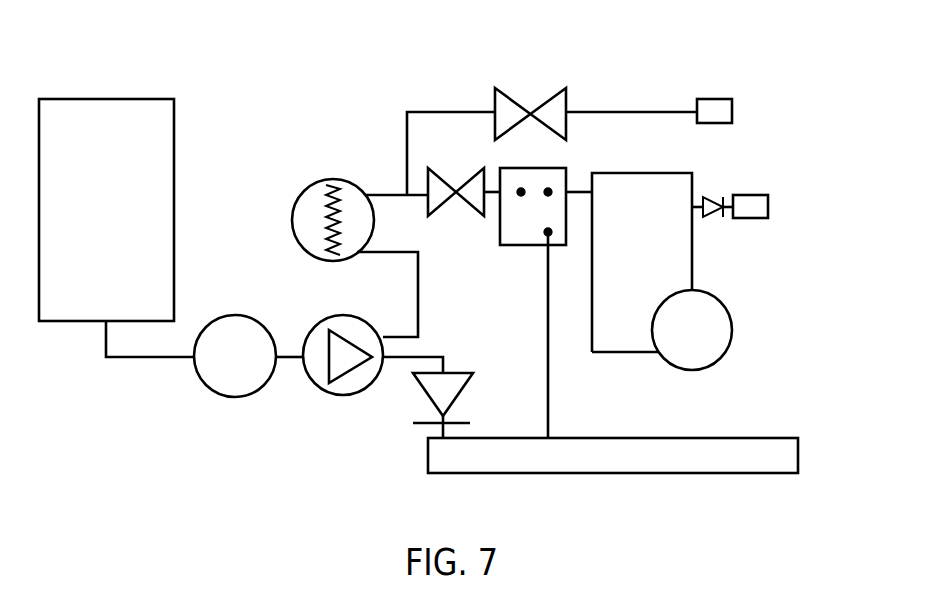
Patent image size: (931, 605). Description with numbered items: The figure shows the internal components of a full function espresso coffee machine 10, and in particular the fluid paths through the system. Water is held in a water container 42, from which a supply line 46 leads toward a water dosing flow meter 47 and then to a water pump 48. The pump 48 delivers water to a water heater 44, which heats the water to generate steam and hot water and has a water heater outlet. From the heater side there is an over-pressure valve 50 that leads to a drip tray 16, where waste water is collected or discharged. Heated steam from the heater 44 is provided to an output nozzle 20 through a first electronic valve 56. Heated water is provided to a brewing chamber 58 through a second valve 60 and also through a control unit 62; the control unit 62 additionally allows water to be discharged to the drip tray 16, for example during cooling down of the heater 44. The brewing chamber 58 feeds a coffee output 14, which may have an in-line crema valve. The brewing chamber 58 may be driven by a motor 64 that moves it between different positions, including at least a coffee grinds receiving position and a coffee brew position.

The coffee machine 10 is at (163, 76).
The water container 42 is at (174, 171).
The supply line 46 is at (125, 358).
The water dosing flow meter 47 is at (255, 398).
The water pump 48 is at (357, 395).
The over-pressure valve 50 is at (465, 385).
The drip tray 16 is at (770, 437).
The water heater 44 is at (330, 180).
The first electronic valve 56 is at (567, 89).
The output nozzle 20 is at (720, 98).
The second valve 60 is at (443, 197).
The control unit 62 is at (522, 248).
The brewing chamber 58 is at (692, 255).
The motor 64 is at (723, 365).
The coffee output 14 is at (755, 195).